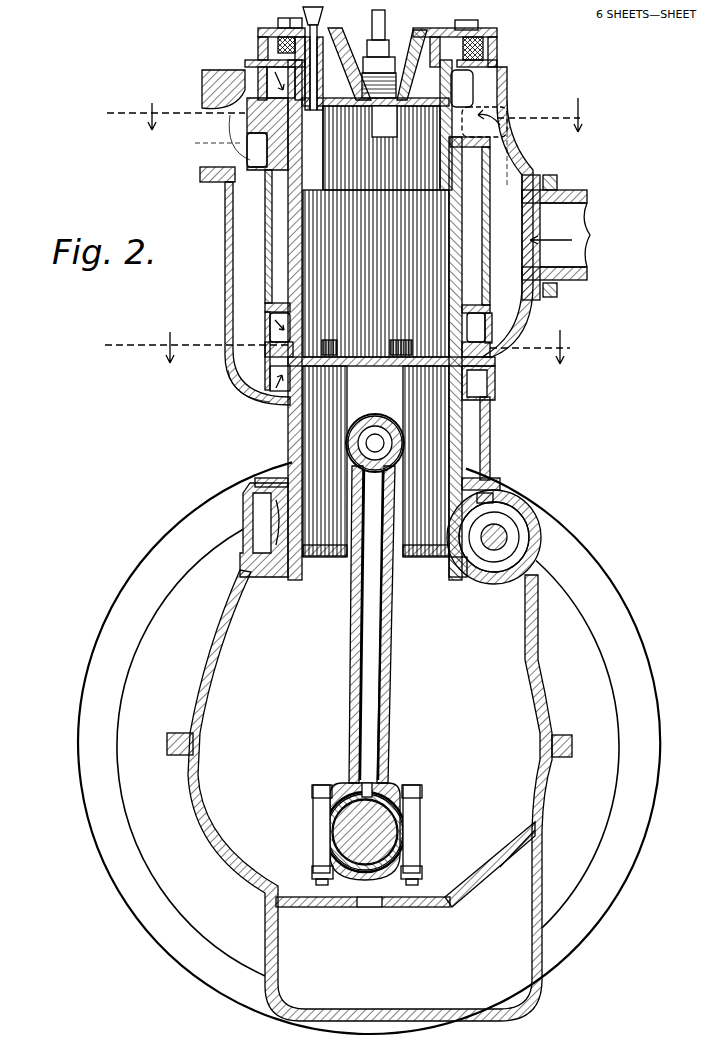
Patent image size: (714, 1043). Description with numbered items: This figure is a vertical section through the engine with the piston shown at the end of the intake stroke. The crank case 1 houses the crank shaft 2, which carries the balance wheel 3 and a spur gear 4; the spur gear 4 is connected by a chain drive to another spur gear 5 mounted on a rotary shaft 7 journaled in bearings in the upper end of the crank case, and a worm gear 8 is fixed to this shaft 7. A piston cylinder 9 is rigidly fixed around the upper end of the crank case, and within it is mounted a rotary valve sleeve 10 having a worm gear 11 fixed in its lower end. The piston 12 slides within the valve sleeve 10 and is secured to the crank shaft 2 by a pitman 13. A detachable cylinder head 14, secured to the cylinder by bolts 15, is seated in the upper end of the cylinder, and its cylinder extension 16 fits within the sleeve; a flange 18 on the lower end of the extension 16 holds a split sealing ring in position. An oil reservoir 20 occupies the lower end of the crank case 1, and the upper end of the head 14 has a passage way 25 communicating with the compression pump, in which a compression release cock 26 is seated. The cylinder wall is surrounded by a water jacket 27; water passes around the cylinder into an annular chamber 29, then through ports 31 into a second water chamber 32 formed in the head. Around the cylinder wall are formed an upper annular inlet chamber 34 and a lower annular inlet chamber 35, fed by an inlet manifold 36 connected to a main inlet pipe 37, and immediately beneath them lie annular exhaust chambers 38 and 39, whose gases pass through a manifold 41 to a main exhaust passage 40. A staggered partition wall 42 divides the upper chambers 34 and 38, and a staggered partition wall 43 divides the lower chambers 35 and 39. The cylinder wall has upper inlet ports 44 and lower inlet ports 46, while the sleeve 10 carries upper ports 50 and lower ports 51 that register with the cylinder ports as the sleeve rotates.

The crank case 1 is at (543, 815).
The crank shaft 2 is at (385, 835).
The balance wheel 3 is at (95, 668).
The spur gear 4 is at (355, 115).
The spur gear 5 is at (344, 347).
The rotary shaft 7 is at (503, 537).
The worm gear 8 is at (508, 520).
The piston cylinder 9 is at (464, 476).
The rotary valve sleeve 10 is at (376, 231).
The worm gear 11 is at (470, 515).
The piston 12 is at (432, 425).
The pitman 13 is at (398, 624).
The cylinder head 14 is at (472, 62).
The bolts 15 is at (488, 53).
The cylinder extension 16 is at (373, 148).
The flange 18 is at (382, 137).
The oil reservoir 20 is at (405, 907).
The passage way 25 is at (395, 68).
The compression release cock 26 is at (322, 22).
The water jacket 27 is at (478, 211).
The annular chamber 29 is at (282, 90).
The ports 31 is at (276, 50).
The second water chamber 32 is at (492, 42).
The annular inlet chamber 34 is at (505, 100).
The annular inlet chamber 35 is at (272, 347).
The inlet manifold 36 is at (520, 300).
The main inlet pipe 37 is at (572, 248).
The annular exhaust chamber 38 is at (235, 178).
The annular exhaust chamber 39 is at (258, 395).
The main exhaust passage 40 is at (185, 146).
The manifold 41 is at (243, 278).
The staggered partition wall 42 is at (205, 145).
The staggered partition wall 43 is at (490, 375).
The inlet ports 44 is at (505, 130).
The inlet ports 46 is at (276, 332).
The ports 50 is at (240, 112).
The ports 51 is at (398, 342).